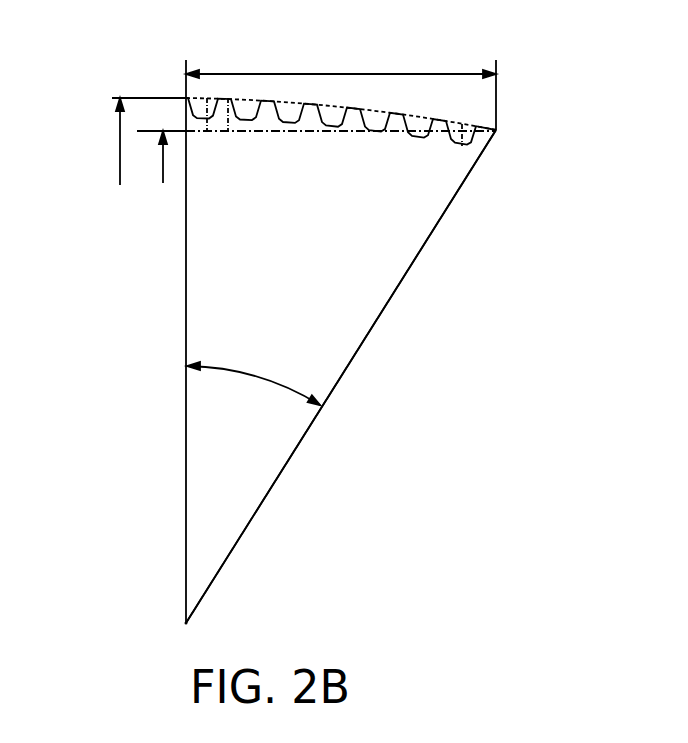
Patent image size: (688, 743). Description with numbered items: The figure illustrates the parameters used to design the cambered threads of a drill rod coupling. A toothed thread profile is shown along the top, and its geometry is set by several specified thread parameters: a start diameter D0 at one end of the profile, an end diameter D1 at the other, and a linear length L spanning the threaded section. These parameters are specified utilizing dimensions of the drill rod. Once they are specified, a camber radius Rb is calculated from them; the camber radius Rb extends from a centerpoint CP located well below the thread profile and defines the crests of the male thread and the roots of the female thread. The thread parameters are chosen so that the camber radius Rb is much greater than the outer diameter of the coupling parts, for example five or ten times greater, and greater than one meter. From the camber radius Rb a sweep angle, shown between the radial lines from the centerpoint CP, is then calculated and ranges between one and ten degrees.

The length L is at (349, 74).
The start diameter D0 is at (120, 147).
The end diameter D1 is at (163, 172).
The camber radius Rb is at (375, 323).
The centerpoint CP is at (186, 623).